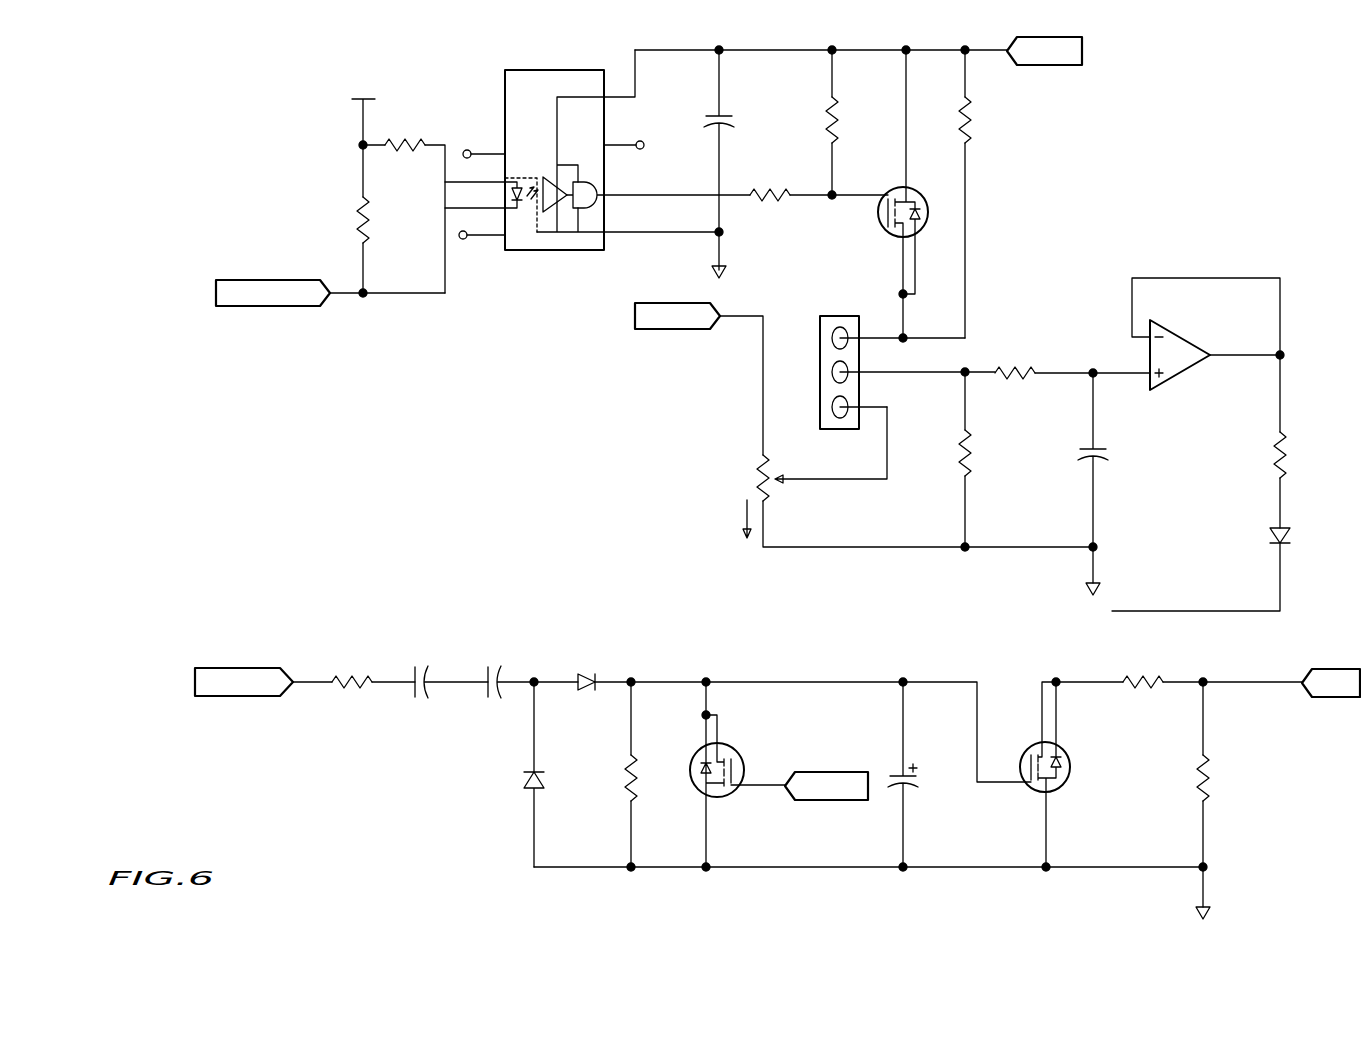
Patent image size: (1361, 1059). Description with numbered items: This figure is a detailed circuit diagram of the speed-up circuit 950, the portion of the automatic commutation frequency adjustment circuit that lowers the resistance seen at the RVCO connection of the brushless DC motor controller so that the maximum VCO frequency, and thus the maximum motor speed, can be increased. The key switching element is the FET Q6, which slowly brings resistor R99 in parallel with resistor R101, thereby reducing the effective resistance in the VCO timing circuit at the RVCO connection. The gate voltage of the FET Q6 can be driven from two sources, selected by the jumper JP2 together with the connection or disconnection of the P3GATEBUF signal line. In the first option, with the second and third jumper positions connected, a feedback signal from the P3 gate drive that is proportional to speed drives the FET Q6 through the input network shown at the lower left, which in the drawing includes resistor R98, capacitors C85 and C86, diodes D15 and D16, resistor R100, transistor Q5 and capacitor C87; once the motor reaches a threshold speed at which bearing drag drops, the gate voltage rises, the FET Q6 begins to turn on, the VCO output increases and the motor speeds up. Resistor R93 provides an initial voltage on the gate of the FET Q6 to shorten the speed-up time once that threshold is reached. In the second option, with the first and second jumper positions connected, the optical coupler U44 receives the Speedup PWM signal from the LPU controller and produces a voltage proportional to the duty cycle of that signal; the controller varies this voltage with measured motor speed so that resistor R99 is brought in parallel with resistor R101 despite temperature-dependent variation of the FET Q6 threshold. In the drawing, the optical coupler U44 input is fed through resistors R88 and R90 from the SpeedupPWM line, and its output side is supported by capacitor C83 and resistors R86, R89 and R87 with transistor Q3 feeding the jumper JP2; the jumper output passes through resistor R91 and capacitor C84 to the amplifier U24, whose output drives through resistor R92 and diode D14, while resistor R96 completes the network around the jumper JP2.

The speed-up circuit 950 is at (1203, 171).
The resistor R88 is at (404, 204).
The resistor R90 is at (364, 220).
The optical coupler U44 is at (597, 193).
The capacitor C83 is at (713, 164).
The resistor R86 is at (831, 124).
The resistor R89 is at (819, 197).
The transistor Q3 is at (892, 174).
The resistor R87 is at (964, 194).
The resistor R93 is at (861, 441).
The jumper JP2 is at (896, 376).
The resistor R96 is at (965, 461).
The resistor R91 is at (1072, 373).
The capacitor C84 is at (1089, 484).
The operational amplifier LM2902D U24 is at (1208, 324).
The resistor R92 is at (1284, 441).
The diode D14 is at (1218, 567).
The resistor R98 is at (354, 681).
The capacitor C85 is at (442, 682).
The capacitor C86 is at (524, 682).
The diode D15 is at (796, 712).
The diode D16 is at (504, 774).
The resistor R100 is at (631, 774).
The transistor Q5 is at (752, 774).
The capacitor C87 is at (925, 774).
The FET Q6 is at (1025, 772).
The resistor R99 is at (1179, 683).
The resistor R101 is at (1231, 804).